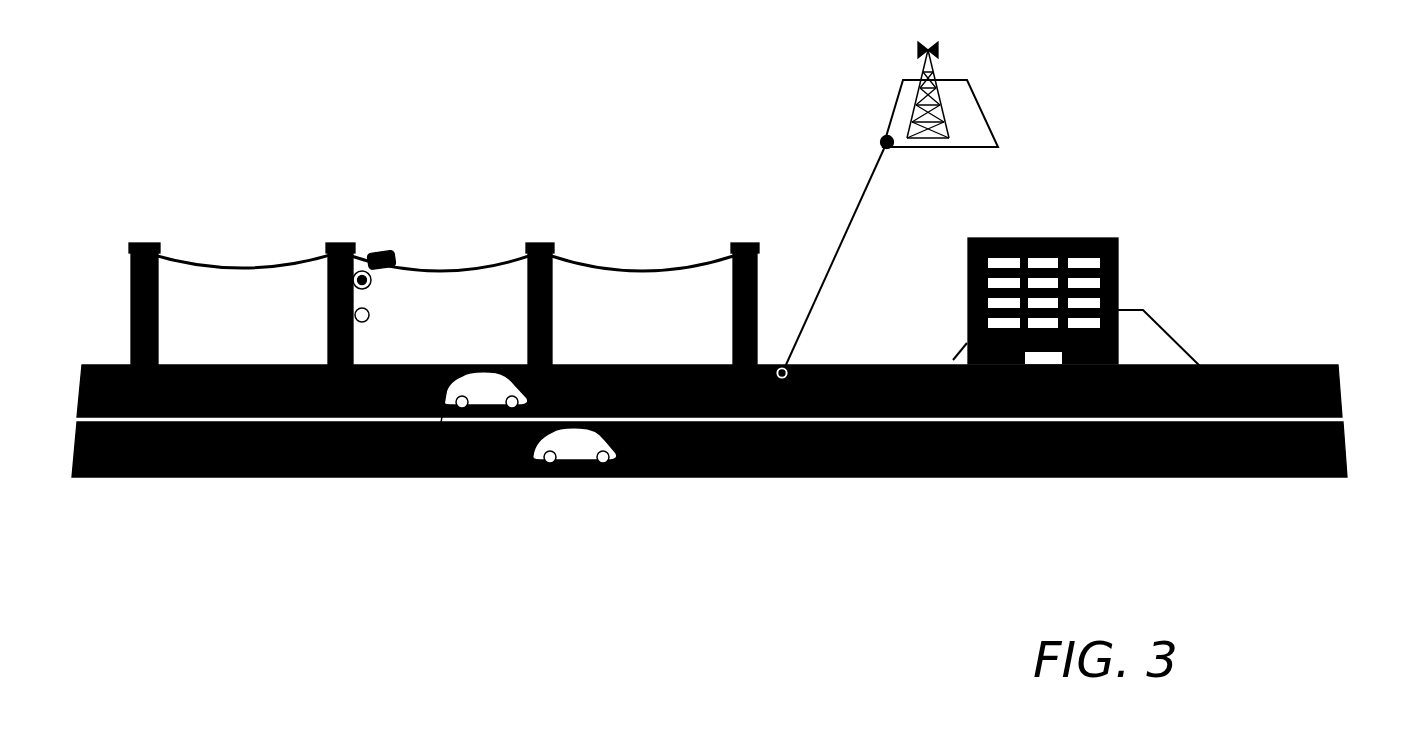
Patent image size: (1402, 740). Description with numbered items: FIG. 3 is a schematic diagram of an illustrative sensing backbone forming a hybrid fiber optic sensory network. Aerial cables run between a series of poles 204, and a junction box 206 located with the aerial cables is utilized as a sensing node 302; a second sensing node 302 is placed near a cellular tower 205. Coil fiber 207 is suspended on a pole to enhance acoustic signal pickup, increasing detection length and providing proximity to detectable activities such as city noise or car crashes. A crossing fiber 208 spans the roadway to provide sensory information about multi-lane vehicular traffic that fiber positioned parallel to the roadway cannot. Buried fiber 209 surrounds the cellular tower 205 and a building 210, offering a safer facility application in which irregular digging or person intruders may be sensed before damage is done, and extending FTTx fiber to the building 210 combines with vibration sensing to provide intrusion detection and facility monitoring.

The pole 204 is at (428, 291).
The cellular tower 205 is at (958, 77).
The junction box 206 is at (380, 252).
The coil fiber 207 is at (355, 314).
The crossing fiber 208 is at (470, 488).
The buried cable 209 is at (983, 115).
The building 210 is at (1054, 286).
The sensing node 302 is at (371, 287).